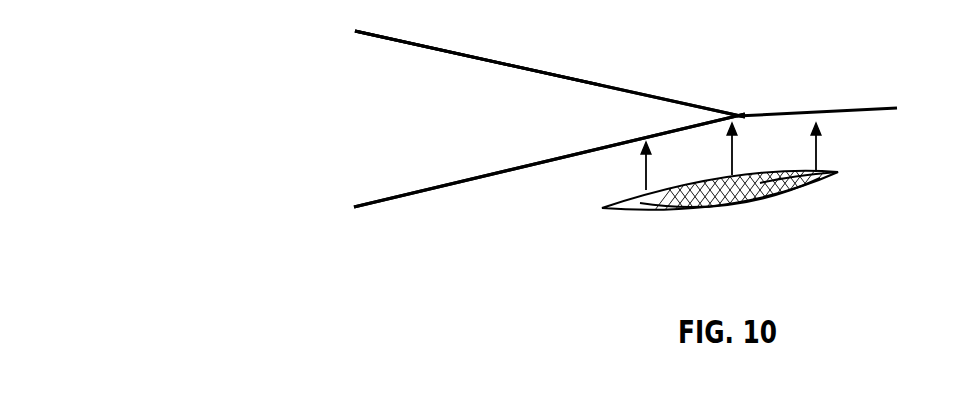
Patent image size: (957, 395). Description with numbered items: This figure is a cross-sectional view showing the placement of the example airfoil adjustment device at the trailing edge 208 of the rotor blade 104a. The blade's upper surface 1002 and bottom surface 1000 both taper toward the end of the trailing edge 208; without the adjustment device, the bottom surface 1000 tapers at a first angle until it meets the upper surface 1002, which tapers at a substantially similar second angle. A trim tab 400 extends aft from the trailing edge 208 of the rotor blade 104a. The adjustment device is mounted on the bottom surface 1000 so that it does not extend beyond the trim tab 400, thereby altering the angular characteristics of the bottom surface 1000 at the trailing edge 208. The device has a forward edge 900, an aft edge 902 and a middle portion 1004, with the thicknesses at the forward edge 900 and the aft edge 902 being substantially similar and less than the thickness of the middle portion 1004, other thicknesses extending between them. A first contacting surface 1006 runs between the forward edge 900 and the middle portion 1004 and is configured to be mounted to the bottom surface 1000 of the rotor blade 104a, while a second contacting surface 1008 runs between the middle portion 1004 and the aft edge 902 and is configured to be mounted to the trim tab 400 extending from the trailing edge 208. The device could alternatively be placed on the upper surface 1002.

The trailing edge 208 is at (690, 73).
The upper surface 1002 is at (447, 50).
The rotor blade 104a is at (534, 69).
The bottom surface 1000 is at (560, 182).
The trim tab 400 is at (878, 107).
The forward edge 900 is at (601, 209).
The aft edge 902 is at (838, 173).
The middle portion 1004 is at (737, 197).
The first contacting surface 1006 is at (705, 188).
The second contacting surface 1008 is at (753, 178).